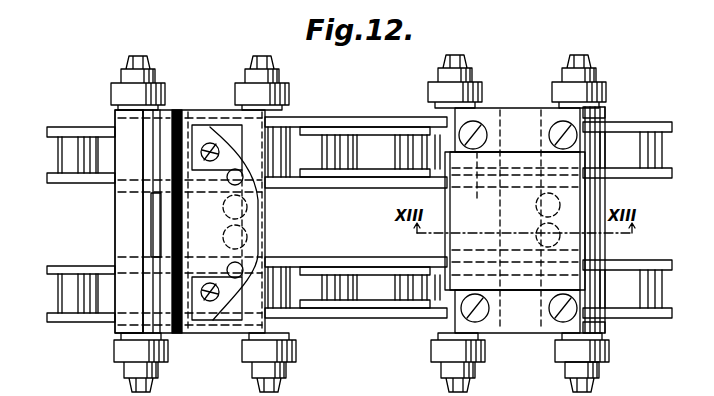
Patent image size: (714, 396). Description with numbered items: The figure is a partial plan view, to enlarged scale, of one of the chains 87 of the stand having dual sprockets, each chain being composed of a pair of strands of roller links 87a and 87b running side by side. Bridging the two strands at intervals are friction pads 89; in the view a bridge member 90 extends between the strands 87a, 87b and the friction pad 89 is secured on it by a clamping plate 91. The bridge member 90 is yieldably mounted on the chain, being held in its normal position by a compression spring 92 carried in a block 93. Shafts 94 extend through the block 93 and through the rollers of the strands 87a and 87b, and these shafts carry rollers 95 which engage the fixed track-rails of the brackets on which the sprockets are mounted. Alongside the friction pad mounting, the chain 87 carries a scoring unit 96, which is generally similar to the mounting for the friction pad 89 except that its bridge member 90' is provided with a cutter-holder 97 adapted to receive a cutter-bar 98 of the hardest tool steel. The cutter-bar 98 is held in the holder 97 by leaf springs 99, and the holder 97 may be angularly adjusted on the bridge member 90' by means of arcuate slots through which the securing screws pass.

The chains 87 is at (340, 212).
The strand of roller links 87a is at (68, 128).
The strand of roller links 87b is at (80, 318).
The friction pad 89 is at (580, 238).
The bridge member 90 is at (190, 202).
The bridge member 90' is at (107, 221).
The clamping plate 91 is at (600, 128).
The compression spring 92 is at (277, 215).
The block 93 is at (605, 192).
The shaft 94 is at (597, 381).
The roller 95 is at (245, 352).
The scoring unit 96 is at (222, 108).
The cutter-holder 97 is at (147, 143).
The cutter-bar 98 is at (165, 213).
The leaf spring 99 is at (247, 240).